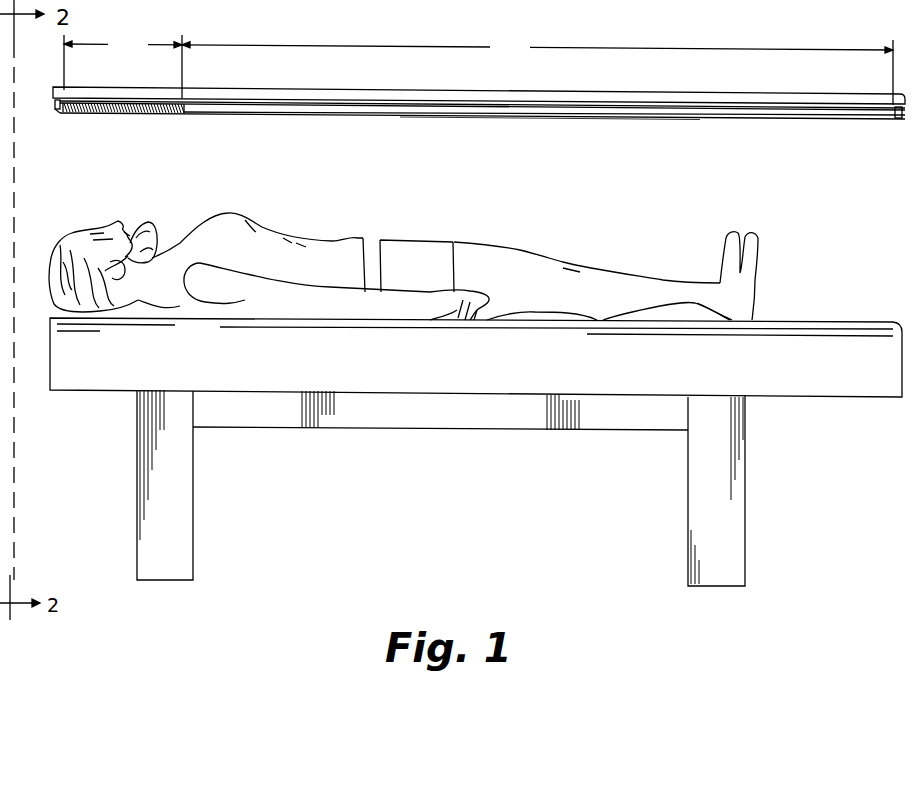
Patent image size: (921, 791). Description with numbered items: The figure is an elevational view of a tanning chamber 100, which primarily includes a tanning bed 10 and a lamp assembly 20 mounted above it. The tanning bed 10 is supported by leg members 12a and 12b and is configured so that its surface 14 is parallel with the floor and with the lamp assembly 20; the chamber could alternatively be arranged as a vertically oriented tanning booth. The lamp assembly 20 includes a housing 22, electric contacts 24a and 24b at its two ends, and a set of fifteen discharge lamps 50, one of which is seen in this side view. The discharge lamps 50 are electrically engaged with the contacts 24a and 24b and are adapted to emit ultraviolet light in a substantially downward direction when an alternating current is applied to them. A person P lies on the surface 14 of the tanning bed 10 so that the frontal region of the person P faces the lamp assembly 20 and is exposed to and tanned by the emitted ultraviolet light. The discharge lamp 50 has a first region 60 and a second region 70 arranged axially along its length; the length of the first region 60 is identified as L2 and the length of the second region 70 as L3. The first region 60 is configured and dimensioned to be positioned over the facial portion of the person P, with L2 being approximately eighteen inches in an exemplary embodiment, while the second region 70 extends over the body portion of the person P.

The tanning chamber 100 is at (473, 88).
The lamp assembly 20 is at (291, 92).
The housing 22 is at (199, 89).
The electric contact 24a is at (56, 112).
The electric contact 24b is at (905, 118).
The discharge lamp 50 is at (345, 122).
The first region 60 is at (125, 113).
The second region 70 is at (455, 118).
The tanning bed 10 is at (476, 433).
The leg member 12a is at (194, 510).
The leg member 12b is at (688, 518).
The surface 14 is at (789, 320).
The person P is at (345, 236).
The length of first region L2 is at (123, 66).
The length of second region L3 is at (636, 36).